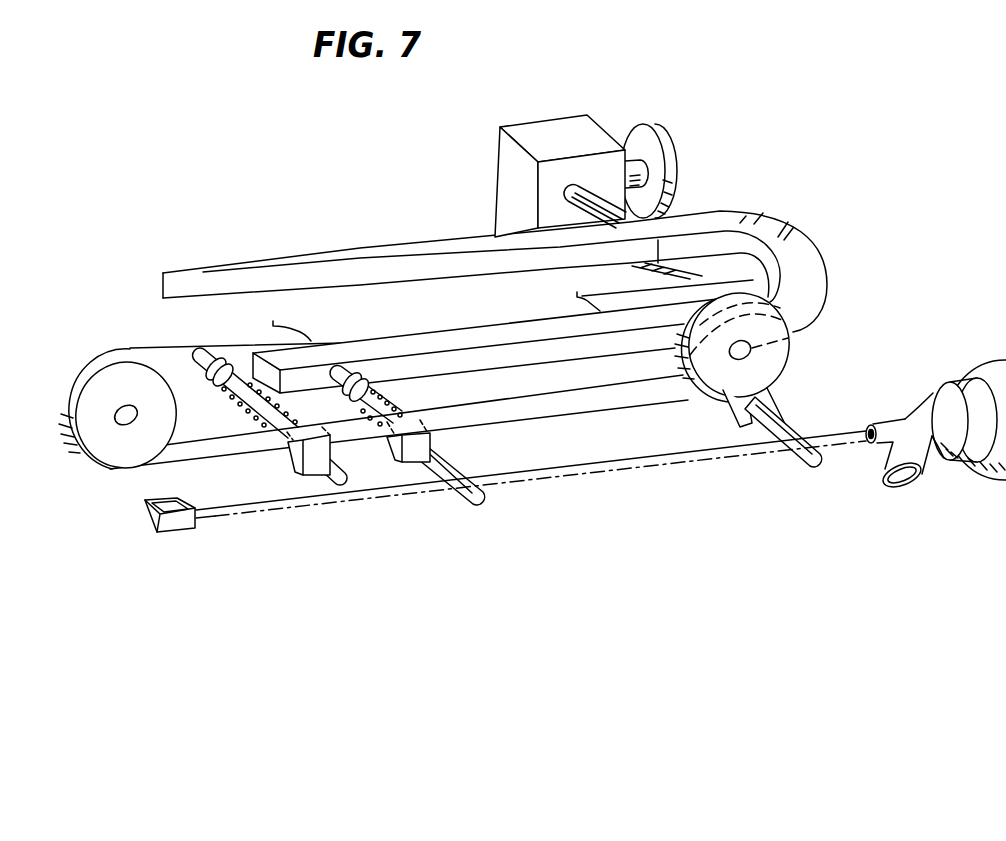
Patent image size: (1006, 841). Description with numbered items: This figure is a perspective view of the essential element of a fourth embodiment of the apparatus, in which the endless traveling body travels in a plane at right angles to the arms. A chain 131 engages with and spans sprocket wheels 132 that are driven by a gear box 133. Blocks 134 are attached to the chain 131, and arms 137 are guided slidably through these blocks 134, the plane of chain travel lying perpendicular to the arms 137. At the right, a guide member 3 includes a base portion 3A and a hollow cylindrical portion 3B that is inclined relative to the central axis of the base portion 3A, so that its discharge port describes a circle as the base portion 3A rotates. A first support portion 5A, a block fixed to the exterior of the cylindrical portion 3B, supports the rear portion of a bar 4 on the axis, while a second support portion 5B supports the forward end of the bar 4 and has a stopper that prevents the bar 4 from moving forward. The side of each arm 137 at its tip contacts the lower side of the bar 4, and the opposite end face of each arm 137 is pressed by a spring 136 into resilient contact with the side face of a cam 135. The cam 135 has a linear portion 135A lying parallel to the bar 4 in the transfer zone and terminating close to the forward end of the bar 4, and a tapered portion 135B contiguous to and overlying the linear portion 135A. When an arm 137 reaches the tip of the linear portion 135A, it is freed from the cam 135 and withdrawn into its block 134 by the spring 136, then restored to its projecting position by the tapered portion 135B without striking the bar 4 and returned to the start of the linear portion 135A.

The chain 131 is at (547, 410).
The sprocket wheels 132 is at (90, 397).
The gear box 133 is at (567, 137).
The blocks 134 is at (390, 457).
The cam 135 is at (517, 255).
The linear portion 135A is at (535, 333).
The tapered portion 135B is at (427, 267).
The spring 136 is at (394, 403).
The arms 137 is at (445, 482).
The guide member 3 is at (955, 362).
The base portion 3A is at (975, 388).
The hollow cylindrical portion 3B is at (917, 404).
The bar 4 is at (678, 460).
The first support portion 5A is at (883, 443).
The second support portion 5B is at (178, 522).